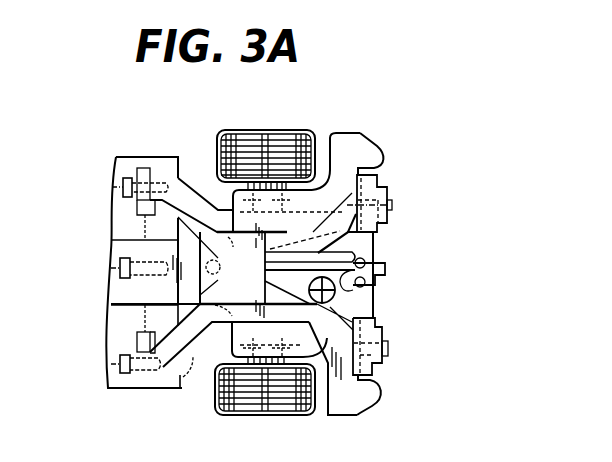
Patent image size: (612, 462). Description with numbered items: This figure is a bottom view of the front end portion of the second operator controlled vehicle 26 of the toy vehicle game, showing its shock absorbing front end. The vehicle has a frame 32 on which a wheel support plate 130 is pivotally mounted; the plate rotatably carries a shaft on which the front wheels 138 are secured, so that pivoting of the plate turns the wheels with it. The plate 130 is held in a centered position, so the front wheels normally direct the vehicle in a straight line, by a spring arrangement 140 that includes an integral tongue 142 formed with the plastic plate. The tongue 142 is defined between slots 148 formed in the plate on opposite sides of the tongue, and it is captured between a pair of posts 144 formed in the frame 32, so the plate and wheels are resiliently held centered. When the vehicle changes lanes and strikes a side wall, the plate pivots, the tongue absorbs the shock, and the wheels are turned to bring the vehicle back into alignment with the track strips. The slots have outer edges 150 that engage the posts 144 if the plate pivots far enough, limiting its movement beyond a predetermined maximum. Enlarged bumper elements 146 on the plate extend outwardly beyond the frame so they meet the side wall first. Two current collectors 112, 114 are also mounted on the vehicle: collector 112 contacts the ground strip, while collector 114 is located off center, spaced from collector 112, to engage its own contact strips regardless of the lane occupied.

The operator controlled vehicle 26 is at (171, 154).
The frame 32 is at (190, 360).
The front wheels 138 is at (296, 108).
The bumper elements 146 is at (352, 133).
The wheel support plate 130 is at (362, 148).
The current collector 114 is at (387, 190).
The outer edges 150 is at (308, 214).
The slots 148 is at (375, 239).
The spring arrangement 140 is at (344, 257).
The posts 144 is at (368, 262).
The tongue 142 is at (358, 287).
The current collector 112 is at (383, 332).